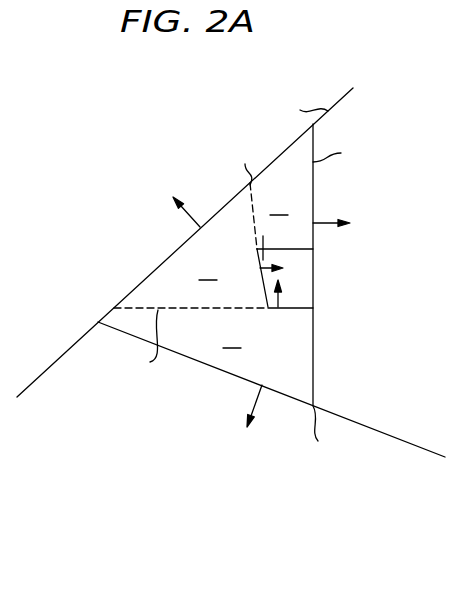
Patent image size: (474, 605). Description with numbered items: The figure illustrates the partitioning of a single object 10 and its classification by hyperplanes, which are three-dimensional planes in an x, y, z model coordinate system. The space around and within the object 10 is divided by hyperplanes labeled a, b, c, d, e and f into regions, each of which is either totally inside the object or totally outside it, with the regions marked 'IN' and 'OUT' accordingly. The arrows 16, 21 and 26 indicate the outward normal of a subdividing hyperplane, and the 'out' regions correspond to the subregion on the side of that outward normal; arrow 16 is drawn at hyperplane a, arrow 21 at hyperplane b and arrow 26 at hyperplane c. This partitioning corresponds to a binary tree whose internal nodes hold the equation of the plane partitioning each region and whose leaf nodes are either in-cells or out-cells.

The object 10 is at (163, 290).
The arrow 16 is at (190, 205).
The arrow 21 is at (261, 386).
The arrow 26 is at (330, 219).